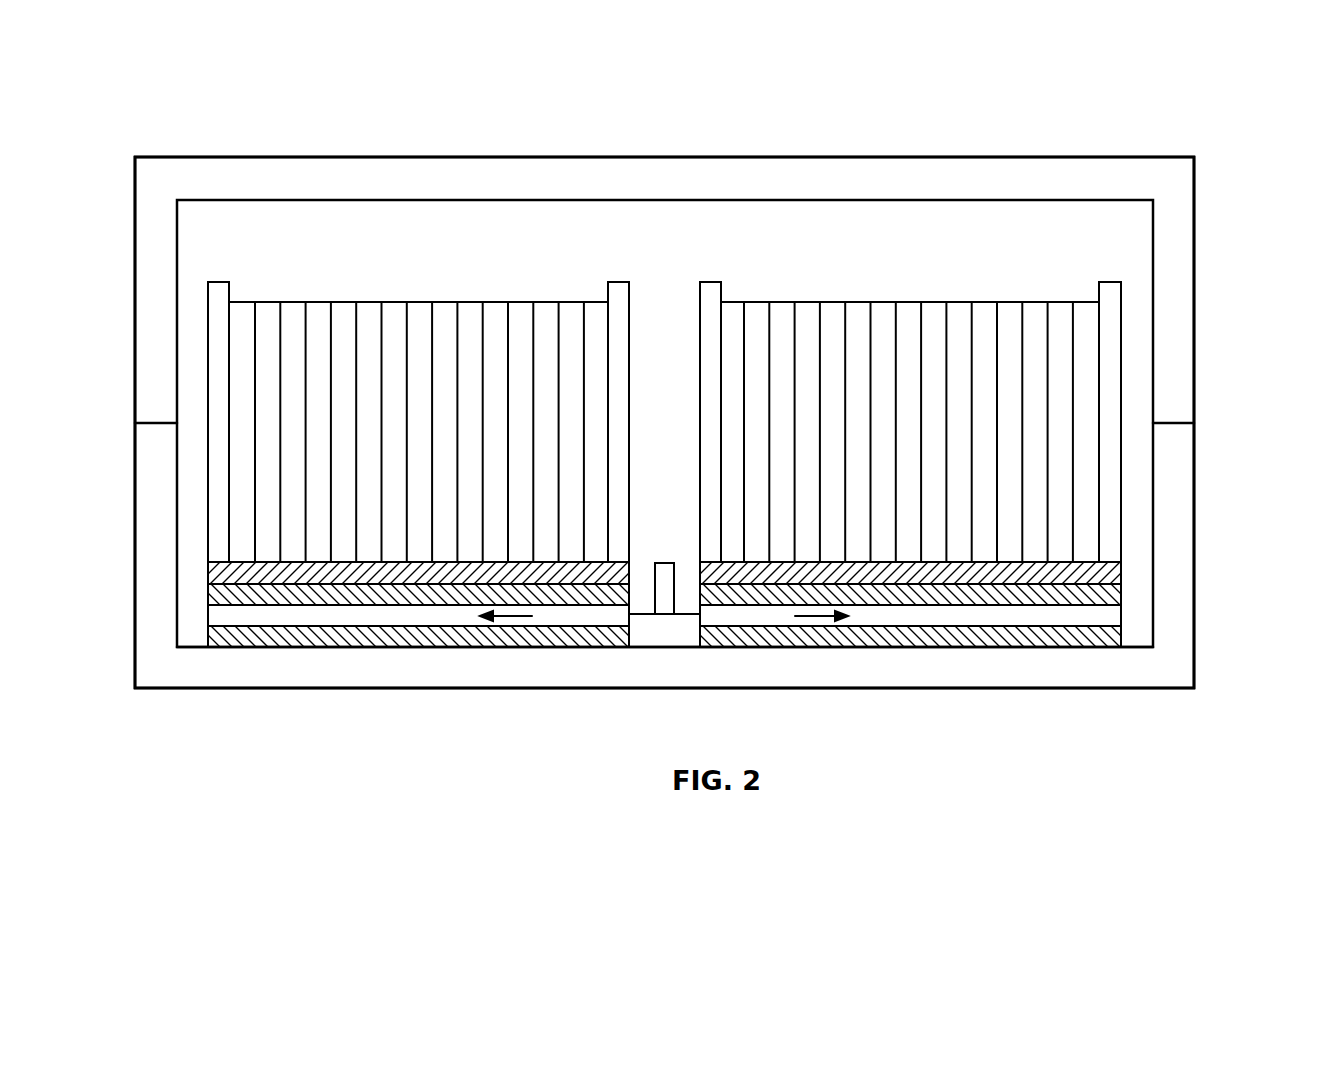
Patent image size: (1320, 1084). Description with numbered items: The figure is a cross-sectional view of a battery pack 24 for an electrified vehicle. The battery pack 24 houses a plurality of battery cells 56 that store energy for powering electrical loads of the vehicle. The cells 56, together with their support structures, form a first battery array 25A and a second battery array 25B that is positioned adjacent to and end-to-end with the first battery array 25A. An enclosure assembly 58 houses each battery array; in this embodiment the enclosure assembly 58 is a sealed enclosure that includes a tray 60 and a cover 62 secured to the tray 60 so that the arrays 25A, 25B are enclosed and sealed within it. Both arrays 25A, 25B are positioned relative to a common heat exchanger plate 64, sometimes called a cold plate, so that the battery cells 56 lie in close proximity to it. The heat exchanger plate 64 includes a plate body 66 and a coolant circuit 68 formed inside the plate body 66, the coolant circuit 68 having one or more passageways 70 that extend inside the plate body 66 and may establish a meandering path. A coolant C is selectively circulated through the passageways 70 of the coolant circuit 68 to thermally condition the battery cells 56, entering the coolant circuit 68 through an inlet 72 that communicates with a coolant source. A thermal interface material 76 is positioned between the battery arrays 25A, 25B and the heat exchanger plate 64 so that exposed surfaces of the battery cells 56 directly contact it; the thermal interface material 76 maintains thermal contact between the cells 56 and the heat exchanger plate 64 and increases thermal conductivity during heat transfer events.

The battery pack 24 is at (1021, 103).
The enclosure assembly 58 is at (1206, 139).
The cover 62 is at (1179, 316).
The tray 60 is at (1194, 526).
The first battery array 25A is at (428, 249).
The second battery array 25B is at (842, 250).
The battery cells 56 is at (337, 313).
The thermal interface material 76 is at (367, 578).
The passageways 70 is at (402, 612).
The coolant circuit 68 is at (462, 637).
The plate body 66 is at (265, 632).
The heat exchanger plate 64 is at (573, 658).
The inlet 72 is at (667, 563).
The coolant C is at (502, 622).